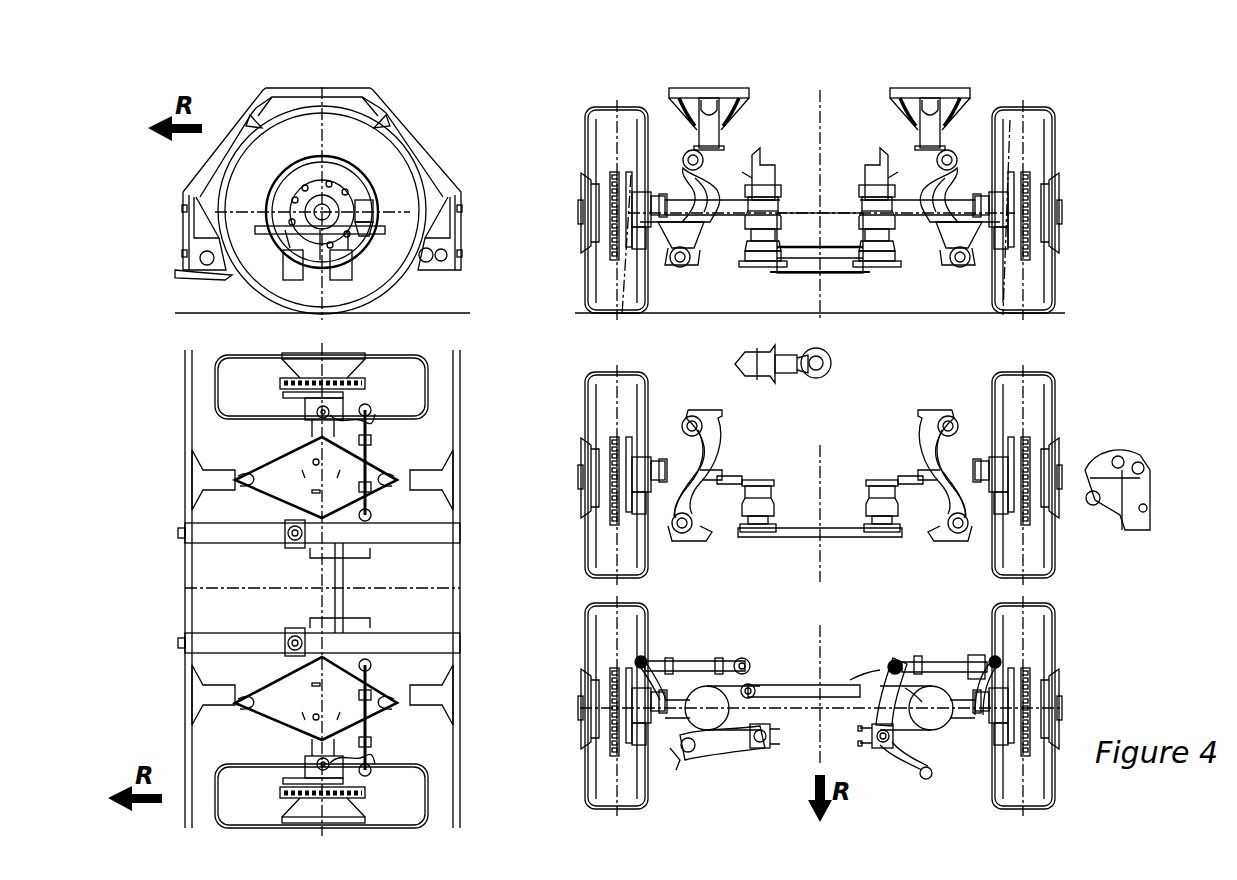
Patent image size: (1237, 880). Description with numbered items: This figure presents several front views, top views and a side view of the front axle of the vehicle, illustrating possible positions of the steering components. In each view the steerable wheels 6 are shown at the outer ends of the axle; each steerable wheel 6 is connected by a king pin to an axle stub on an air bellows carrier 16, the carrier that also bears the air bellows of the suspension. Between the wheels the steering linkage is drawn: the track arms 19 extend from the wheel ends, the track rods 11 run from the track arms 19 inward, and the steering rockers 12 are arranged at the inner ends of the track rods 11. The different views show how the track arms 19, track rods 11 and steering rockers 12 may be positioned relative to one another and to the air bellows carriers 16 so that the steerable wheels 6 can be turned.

The steerable wheel 6 is at (392, 164).
The track rod 11 is at (370, 462).
The steering rocker 12 is at (885, 508).
The air bellows carrier 16 is at (683, 268).
The track arm 19 is at (355, 368).